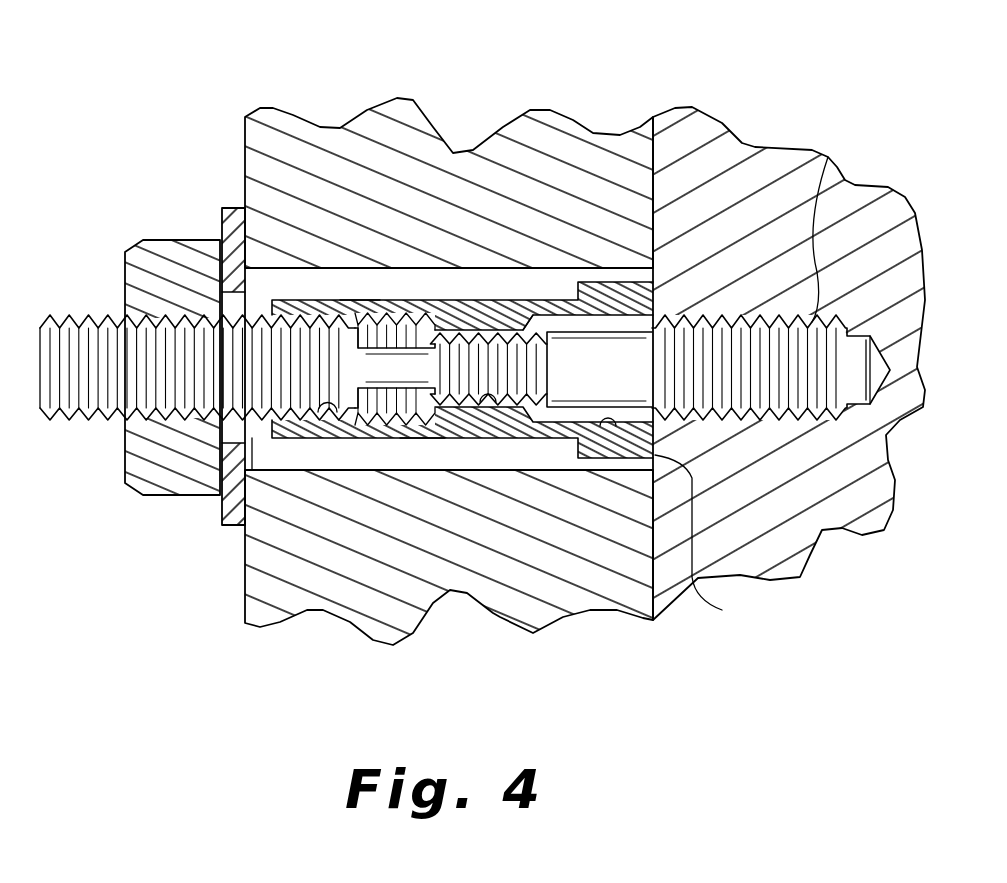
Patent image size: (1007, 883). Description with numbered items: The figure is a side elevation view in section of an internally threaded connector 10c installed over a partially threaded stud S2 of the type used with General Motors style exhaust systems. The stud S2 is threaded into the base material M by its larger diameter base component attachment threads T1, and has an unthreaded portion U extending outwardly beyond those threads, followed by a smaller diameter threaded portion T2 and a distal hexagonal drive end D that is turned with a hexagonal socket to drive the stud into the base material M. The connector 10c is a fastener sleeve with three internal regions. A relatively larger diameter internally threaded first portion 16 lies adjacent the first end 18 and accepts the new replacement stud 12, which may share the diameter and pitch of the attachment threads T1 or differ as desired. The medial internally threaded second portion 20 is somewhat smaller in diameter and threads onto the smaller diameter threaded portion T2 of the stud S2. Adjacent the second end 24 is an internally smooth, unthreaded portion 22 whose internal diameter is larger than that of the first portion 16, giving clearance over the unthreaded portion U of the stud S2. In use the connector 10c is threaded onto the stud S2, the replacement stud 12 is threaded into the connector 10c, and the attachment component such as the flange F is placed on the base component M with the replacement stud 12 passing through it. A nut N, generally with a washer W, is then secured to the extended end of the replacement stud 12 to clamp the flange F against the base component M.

The replacement stud 12 is at (459, 275).
The nut N is at (128, 252).
The washer W is at (230, 208).
The flange F is at (370, 105).
The base material M is at (755, 147).
The distal hexagonal drive end D is at (357, 300).
The smaller diameter threaded portion T2 is at (528, 318).
The partially threaded stud S2 is at (572, 322).
The unthreaded portion U is at (602, 333).
The larger diameter base component attachment threads T1 is at (829, 157).
The internally threaded first portion 16 is at (316, 440).
The first end 18 is at (262, 450).
The internally threaded connector 10c is at (421, 440).
The internally threaded second portion 20 is at (497, 410).
The unthreaded portion 22 is at (614, 430).
The second end 24 is at (722, 610).